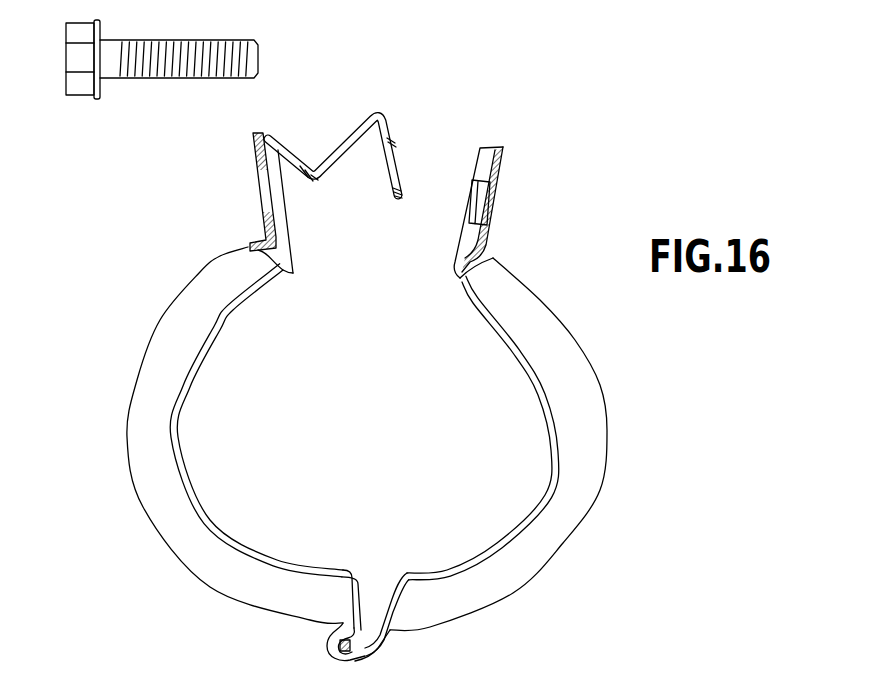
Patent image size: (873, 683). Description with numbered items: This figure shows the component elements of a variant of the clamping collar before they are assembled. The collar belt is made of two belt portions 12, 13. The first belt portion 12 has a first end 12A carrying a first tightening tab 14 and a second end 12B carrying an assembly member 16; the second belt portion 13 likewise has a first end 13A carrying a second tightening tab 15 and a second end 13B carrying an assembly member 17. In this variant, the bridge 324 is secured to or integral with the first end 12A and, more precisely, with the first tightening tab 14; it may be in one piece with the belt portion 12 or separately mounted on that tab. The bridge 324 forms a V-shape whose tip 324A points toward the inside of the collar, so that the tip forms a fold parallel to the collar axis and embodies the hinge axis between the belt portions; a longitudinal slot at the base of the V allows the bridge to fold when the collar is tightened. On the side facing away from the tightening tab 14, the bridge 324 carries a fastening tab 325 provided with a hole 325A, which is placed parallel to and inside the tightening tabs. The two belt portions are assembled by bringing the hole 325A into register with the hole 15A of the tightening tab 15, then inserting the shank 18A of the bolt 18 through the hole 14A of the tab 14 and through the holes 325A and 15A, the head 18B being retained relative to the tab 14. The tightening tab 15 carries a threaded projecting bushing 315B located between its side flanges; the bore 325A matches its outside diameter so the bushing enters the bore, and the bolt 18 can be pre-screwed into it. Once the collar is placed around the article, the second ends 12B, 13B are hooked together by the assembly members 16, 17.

The belt portion 12 is at (227, 441).
The first end of belt portion 12A is at (243, 258).
The second end of belt portion 12B is at (290, 595).
The belt portion 13 is at (496, 452).
The first end of belt portion 13A is at (493, 273).
The second end of belt portion 13B is at (433, 602).
The tightening tab 14 is at (254, 201).
The hole 14A is at (260, 188).
The tightening tab 15 is at (526, 180).
The hole 15A is at (495, 193).
The threaded projecting bushing 315B is at (480, 208).
The assembly member 16 is at (348, 643).
The assembly member 17 is at (327, 653).
The bolt 18 is at (191, 79).
The shank 18A is at (203, 68).
The head 18B is at (77, 82).
The bridge 324 is at (356, 148).
The tip of the V-shape 324A is at (308, 173).
The fastening tab 325 is at (416, 159).
The hole 325A is at (400, 167).